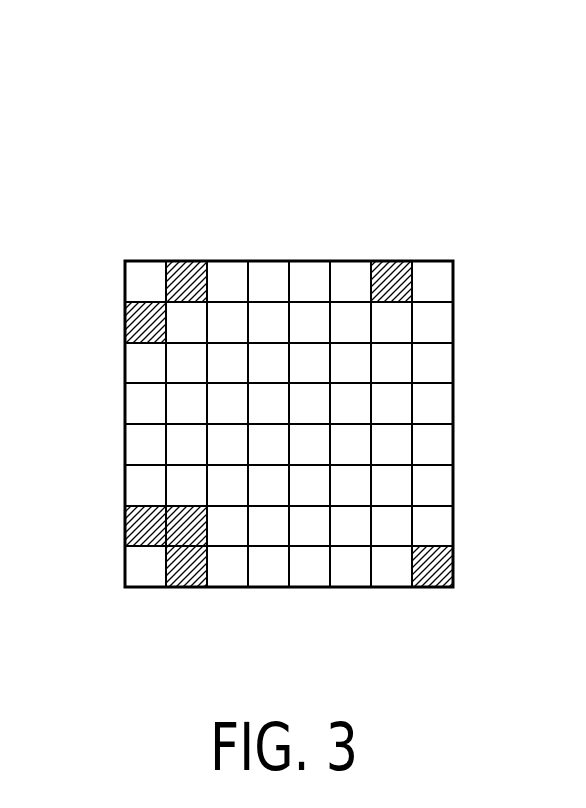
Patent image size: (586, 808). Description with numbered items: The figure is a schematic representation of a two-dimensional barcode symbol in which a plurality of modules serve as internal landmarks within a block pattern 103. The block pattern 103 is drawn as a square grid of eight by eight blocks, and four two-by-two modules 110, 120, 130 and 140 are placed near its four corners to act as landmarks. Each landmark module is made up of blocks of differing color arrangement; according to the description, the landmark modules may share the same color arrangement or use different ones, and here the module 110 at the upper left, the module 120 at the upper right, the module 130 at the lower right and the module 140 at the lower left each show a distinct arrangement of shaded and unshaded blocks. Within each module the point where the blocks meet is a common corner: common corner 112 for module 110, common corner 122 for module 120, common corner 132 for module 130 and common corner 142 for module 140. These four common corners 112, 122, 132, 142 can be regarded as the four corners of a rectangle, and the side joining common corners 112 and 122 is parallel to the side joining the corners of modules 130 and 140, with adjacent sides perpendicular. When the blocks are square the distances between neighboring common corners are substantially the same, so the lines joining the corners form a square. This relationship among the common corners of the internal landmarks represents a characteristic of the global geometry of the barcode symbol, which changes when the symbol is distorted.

The block pattern 103 is at (312, 140).
The module 110 is at (167, 252).
The common corner 112 is at (165, 300).
The module 120 is at (423, 255).
The common corner 122 is at (413, 302).
The module 130 is at (408, 598).
The common corner 132 is at (412, 548).
The module 140 is at (165, 597).
The common corner 142 is at (165, 547).